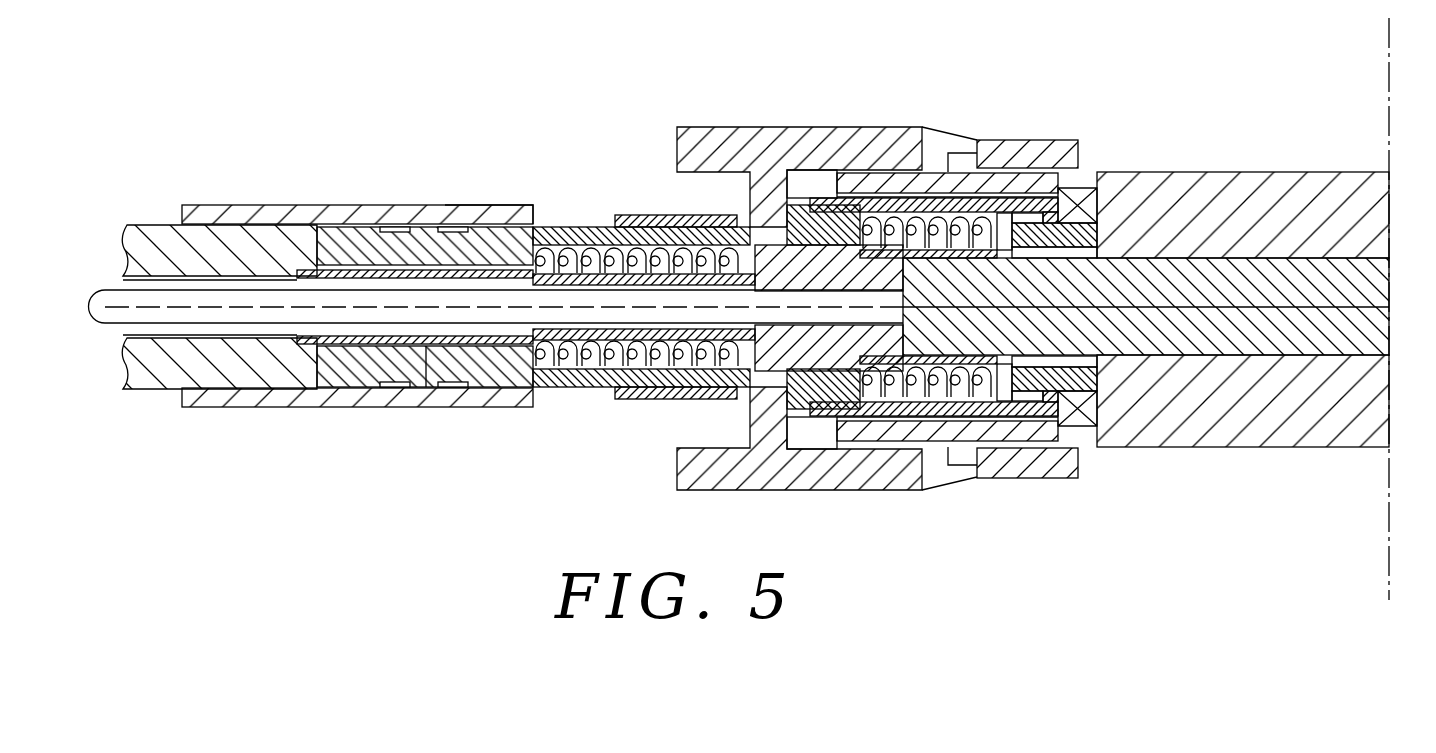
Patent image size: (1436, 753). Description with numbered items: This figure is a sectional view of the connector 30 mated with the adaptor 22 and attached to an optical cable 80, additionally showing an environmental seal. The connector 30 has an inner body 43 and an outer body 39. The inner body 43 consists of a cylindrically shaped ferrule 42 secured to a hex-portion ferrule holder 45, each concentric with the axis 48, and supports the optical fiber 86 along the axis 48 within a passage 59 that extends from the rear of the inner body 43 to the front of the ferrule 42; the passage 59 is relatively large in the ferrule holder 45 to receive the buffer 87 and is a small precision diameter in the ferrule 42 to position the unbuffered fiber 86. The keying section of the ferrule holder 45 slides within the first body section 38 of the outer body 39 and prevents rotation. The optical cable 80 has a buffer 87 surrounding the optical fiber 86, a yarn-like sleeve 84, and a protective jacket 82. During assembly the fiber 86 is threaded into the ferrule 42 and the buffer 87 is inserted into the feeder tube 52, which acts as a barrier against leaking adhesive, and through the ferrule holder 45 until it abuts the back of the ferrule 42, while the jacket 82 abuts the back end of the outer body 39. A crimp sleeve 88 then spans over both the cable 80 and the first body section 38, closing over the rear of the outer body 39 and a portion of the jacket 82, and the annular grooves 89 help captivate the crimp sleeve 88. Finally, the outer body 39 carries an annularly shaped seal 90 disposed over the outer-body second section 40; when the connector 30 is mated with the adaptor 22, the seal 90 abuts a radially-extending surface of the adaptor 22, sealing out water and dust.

The adaptor 22 is at (1292, 480).
The connector 30 is at (670, 84).
The first body section 38 is at (341, 372).
The outer body 39 is at (576, 226).
The outer-body second section 40 is at (1031, 395).
The ferrule 42 is at (1167, 328).
The inner body 43 is at (1213, 257).
The ferrule holder 45 is at (750, 421).
The axis 48 is at (1435, 347).
The feeder tube 52 is at (423, 338).
The passage 59 is at (1391, 307).
The optical cable 80 is at (200, 434).
The protective jacket 82 is at (274, 407).
The yarn-like sleeve 84 is at (266, 236).
The optical fiber 86 is at (147, 305).
The buffer 87 is at (162, 315).
The crimp sleeve 88 is at (470, 205).
The annular grooves 89 is at (450, 226).
The seal 90 is at (1078, 188).